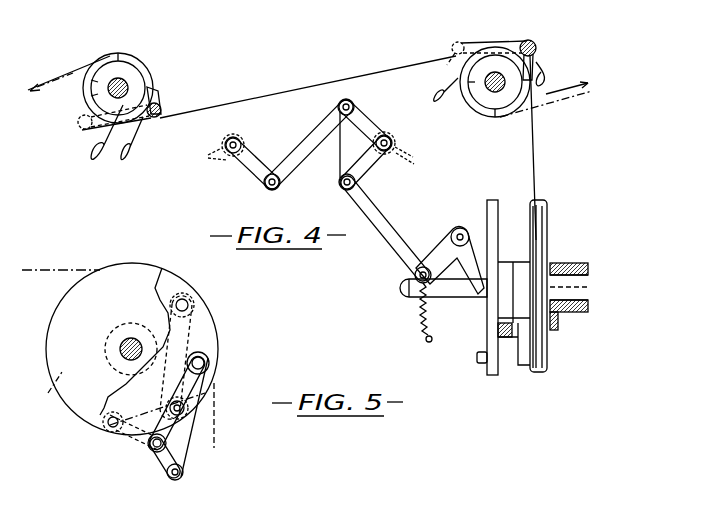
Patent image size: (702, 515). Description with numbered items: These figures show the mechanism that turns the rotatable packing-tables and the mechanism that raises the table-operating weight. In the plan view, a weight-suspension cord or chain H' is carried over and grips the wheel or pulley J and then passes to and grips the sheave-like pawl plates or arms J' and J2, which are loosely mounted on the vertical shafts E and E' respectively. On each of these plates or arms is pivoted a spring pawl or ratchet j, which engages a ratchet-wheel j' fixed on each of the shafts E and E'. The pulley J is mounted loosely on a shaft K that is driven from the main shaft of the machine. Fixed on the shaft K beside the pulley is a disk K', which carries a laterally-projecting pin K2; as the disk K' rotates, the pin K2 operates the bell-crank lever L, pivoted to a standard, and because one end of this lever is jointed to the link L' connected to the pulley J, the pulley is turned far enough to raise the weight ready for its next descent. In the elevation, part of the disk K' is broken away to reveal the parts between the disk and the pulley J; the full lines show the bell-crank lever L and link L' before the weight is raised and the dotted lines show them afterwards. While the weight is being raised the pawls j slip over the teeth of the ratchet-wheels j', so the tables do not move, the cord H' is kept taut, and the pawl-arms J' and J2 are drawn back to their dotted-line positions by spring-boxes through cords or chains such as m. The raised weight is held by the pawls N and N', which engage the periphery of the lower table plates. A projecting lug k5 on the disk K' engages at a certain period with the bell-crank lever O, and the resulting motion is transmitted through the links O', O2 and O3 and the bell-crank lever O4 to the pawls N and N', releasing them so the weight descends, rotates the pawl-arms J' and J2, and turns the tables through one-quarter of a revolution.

In FIG. 4, the cord or chain m is at (311, 87).
In FIG. 4, the vertical shaft E' is at (143, 75).
In FIG. 4, the sheave-like pawl plate or arm J2 is at (158, 108).
In FIG. 4, the ratchet-wheel j' is at (274, 115).
In FIG. 4, the spring pawl or ratchet j is at (337, 105).
In FIG. 4, the vertical shaft E is at (488, 102).
In FIG. 4, the sheave-like pawl plate or arm J' is at (491, 48).
In FIG. 4, the weight-suspension cord or chain H' is at (360, 145).
In FIG. 5, the weight-suspension cord or chain H' is at (228, 417).
In FIG. 4, the pawl N is at (226, 158).
In FIG. 4, the link O3 is at (251, 142).
In FIG. 4, the link O2 is at (306, 157).
In FIG. 4, the bell-crank lever O4 is at (380, 119).
In FIG. 4, the pawl N' is at (402, 145).
In FIG. 4, the link O' is at (386, 229).
In FIG. 4, the bell-crank lever O is at (450, 260).
In FIG. 4, the shaft K is at (443, 310).
In FIG. 4, the disk K' is at (481, 287).
In FIG. 5, the disk K' is at (47, 392).
In FIG. 4, the wheel or pulley J is at (559, 286).
In FIG. 5, the wheel or pulley J is at (137, 349).
In FIG. 4, the laterally-projecting pin K2 is at (507, 322).
In FIG. 5, the laterally-projecting pin K2 is at (172, 402).
In FIG. 4, the link L' is at (516, 344).
In FIG. 5, the link L' is at (173, 385).
In FIG. 4, the projecting lug k5 is at (477, 353).
In FIG. 5, the bell-crank lever L is at (143, 441).